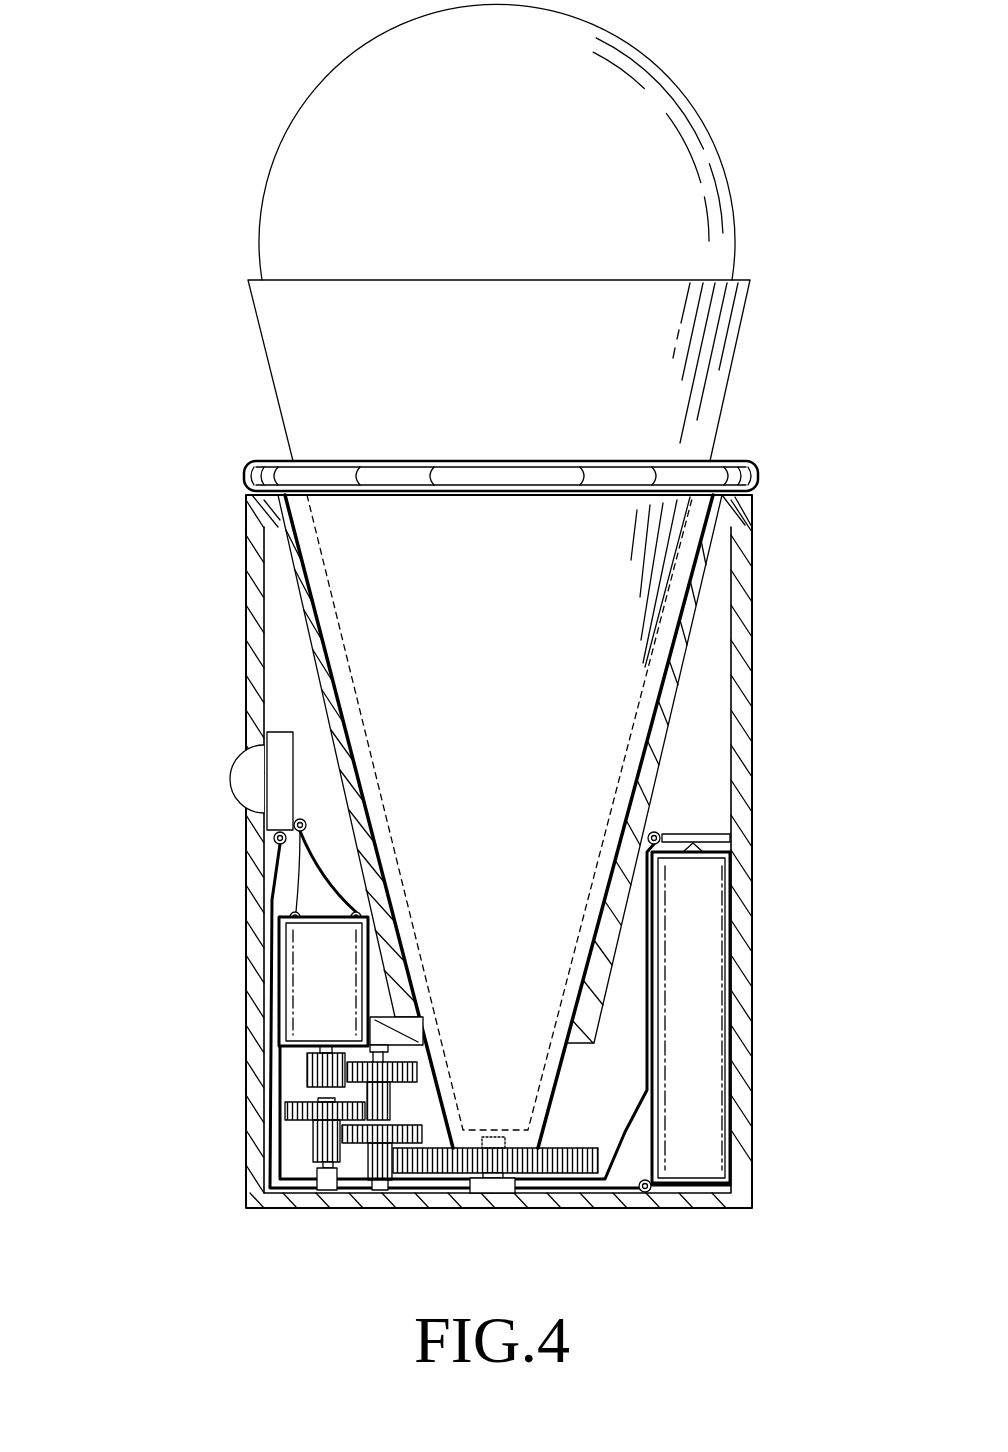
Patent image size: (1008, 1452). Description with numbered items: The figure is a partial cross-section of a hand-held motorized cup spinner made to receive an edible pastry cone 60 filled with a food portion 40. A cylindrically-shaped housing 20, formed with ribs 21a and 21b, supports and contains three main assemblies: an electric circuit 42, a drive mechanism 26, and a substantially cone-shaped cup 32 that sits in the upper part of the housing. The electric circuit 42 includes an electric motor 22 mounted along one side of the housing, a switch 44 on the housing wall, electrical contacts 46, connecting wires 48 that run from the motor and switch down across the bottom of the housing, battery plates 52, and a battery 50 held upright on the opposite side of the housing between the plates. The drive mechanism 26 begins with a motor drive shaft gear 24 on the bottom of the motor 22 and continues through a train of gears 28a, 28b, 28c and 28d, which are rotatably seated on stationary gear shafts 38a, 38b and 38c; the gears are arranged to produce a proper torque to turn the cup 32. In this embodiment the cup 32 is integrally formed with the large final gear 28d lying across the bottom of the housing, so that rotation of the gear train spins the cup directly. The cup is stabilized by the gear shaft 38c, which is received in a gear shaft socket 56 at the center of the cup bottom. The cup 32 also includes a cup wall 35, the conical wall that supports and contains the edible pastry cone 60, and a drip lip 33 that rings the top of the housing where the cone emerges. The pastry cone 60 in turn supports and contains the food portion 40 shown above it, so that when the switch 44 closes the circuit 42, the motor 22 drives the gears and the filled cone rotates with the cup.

The housing 20 is at (257, 622).
The rib 21a is at (318, 694).
The rib 21b is at (675, 690).
The electric motor 22 is at (310, 955).
The motor drive shaft gear 24 is at (310, 1060).
The drive mechanism 26 is at (328, 1137).
The gear 28a is at (363, 1078).
The gear 28b is at (295, 1110).
The gear 28c is at (360, 1143).
The gear 28d is at (447, 1165).
The cup 32 is at (354, 552).
The drip lip 33 is at (712, 472).
The cup wall 35 is at (302, 566).
The gear shaft 38a is at (322, 1163).
The gear shaft 38b is at (383, 1058).
The gear shaft 38c is at (495, 1193).
The food portion 40 is at (297, 237).
The electric circuit 42 is at (273, 877).
The switch 44 is at (246, 765).
The electrical contacts 46 is at (660, 1258).
The connecting wires 48 is at (322, 862).
The battery 50 is at (702, 952).
The battery plates 52 is at (712, 838).
The gear shaft socket 56 is at (498, 1143).
The edible pastry cone 60 is at (340, 383).